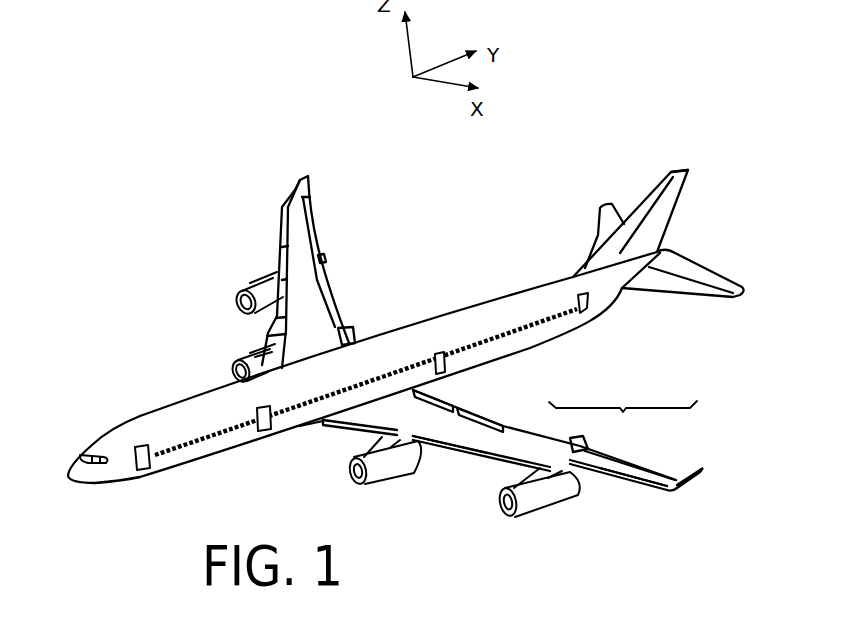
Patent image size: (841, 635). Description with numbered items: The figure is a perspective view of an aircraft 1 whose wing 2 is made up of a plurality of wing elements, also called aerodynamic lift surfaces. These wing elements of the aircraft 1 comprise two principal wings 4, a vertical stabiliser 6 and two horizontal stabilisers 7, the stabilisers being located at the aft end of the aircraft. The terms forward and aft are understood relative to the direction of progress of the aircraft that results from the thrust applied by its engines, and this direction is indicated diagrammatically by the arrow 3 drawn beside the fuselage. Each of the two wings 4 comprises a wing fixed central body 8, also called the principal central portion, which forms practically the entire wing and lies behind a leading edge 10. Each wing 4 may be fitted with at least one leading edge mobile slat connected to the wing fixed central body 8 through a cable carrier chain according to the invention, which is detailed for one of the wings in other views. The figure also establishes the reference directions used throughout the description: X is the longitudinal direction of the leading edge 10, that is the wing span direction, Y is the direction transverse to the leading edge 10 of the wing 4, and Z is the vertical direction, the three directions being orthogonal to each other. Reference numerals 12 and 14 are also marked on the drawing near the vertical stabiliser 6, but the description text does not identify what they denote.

The aircraft 1 is at (247, 137).
The wing 2 is at (623, 421).
The arrow 3 is at (212, 273).
The principal wing 4 is at (490, 428).
The vertical stabiliser 6 is at (619, 257).
The horizontal stabiliser 7 is at (591, 237).
The wing fixed central body 8 is at (637, 477).
The leading edge 10 is at (483, 450).
The rudder 12 is at (640, 206).
The fin tip 14 is at (651, 211).